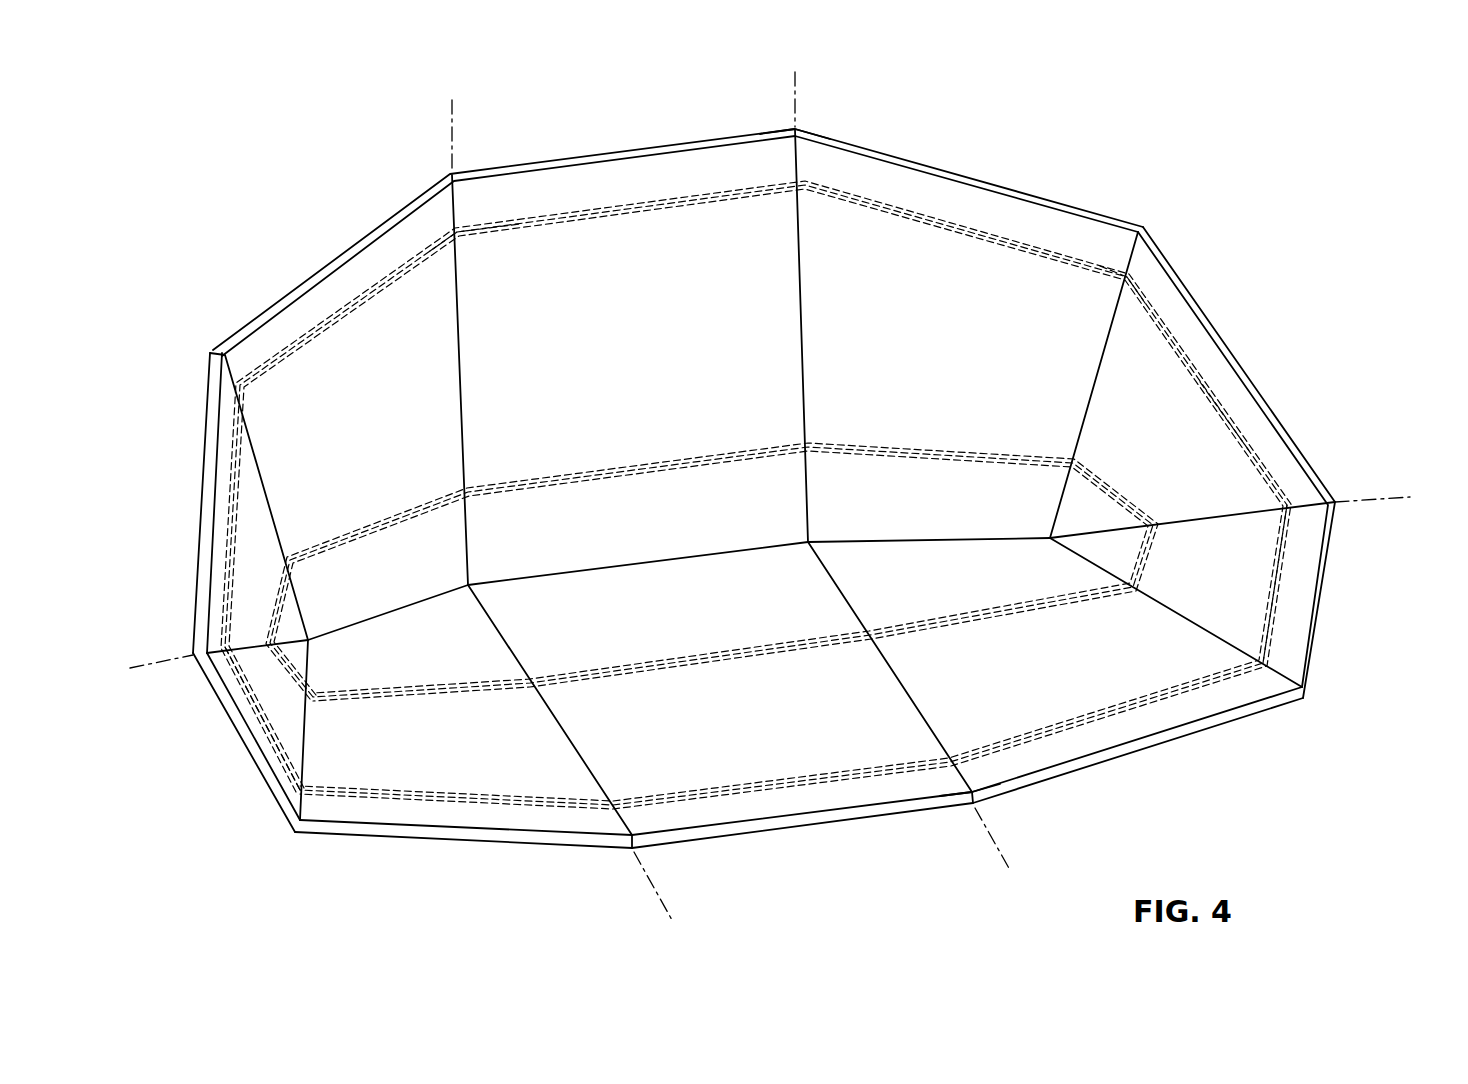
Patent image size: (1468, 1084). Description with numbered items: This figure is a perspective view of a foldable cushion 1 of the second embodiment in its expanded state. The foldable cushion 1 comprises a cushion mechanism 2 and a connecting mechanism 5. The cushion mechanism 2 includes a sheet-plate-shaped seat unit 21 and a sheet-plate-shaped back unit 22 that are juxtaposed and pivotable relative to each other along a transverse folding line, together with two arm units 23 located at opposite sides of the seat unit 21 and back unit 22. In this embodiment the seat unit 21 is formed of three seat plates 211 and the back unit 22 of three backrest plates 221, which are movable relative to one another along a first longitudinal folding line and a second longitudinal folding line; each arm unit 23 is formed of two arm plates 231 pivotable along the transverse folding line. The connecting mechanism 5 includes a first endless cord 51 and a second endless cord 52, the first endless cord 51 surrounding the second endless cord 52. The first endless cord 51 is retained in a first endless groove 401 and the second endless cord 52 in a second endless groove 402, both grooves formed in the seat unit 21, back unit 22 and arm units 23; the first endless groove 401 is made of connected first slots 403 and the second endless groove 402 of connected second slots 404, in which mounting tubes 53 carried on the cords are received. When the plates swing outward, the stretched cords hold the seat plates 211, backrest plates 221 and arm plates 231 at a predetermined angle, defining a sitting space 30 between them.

The foldable cushion 1 is at (1312, 145).
The cushion mechanism 2 is at (275, 262).
The connecting mechanism 5 is at (598, 826).
The seat unit 21 is at (1212, 745).
The back unit 22 is at (940, 150).
The arm unit 23 is at (1236, 312).
The sitting space 30 is at (802, 748).
The first endless cord 51 is at (455, 812).
The second endless cord 52 is at (280, 584).
The mounting tube 53 is at (1125, 283).
The seat plate 211 is at (925, 787).
The backrest plate 221 is at (837, 160).
The arm plate 231 is at (200, 623).
The first endless groove 401 is at (1252, 418).
The second endless groove 402 is at (1170, 553).
The first slot 403 is at (520, 217).
The second slot 404 is at (357, 700).